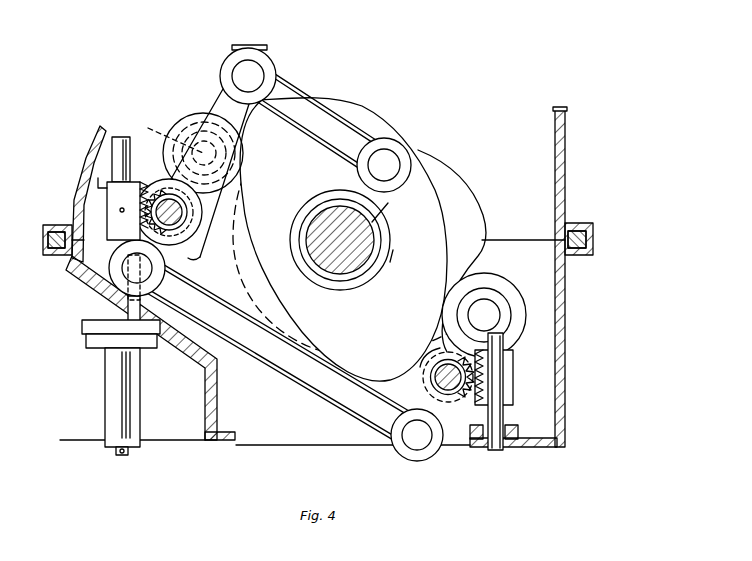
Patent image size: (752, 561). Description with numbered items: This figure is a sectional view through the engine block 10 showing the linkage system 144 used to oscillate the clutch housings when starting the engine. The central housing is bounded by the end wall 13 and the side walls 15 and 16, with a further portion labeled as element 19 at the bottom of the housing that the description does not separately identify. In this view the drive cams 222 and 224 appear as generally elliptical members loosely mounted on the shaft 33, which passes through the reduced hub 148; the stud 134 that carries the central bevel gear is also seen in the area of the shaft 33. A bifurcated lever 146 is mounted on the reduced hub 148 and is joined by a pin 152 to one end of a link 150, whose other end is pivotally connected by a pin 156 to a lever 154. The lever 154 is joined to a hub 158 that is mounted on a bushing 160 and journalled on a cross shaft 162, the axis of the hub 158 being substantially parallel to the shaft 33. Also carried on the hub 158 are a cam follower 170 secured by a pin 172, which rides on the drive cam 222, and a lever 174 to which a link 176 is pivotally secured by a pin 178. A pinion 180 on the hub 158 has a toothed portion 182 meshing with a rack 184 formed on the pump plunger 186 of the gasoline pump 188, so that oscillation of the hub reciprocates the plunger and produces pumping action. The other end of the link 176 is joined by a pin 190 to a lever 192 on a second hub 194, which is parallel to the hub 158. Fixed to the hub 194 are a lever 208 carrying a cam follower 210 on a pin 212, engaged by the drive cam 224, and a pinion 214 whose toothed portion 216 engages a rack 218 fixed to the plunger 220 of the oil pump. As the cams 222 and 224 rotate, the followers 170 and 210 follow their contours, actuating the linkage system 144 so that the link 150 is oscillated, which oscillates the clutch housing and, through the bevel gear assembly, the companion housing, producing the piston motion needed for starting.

The engine block 10 is at (580, 328).
The end wall 13 is at (565, 134).
The side wall 15 is at (565, 388).
The side wall 16 is at (205, 400).
The base 19 is at (292, 438).
The shaft 33 is at (325, 258).
The stud 134 is at (315, 214).
The linkage system 144 is at (322, 50).
The bifurcated lever 146 is at (388, 203).
The reduced hub 148 is at (393, 250).
The link 150 is at (297, 95).
The pin 152 is at (388, 160).
The lever 154 is at (222, 92).
The pin 156 is at (250, 74).
The hub 158 is at (203, 246).
The bushing 160 is at (183, 211).
The cross shaft 162 is at (190, 235).
The cam follower 170 is at (180, 128).
The pin 172 is at (164, 132).
The lever 174 is at (160, 253).
The link 176 is at (253, 342).
The pin 178 is at (130, 272).
The pinion 180 is at (140, 220).
The toothed portion 182 is at (151, 185).
The rack 184 is at (98, 172).
The pump plunger 186 is at (119, 137).
The gasoline pump 188 is at (118, 382).
The pin 190 is at (418, 438).
The lever 192 is at (450, 406).
The hub 194 is at (428, 366).
The lever 208 is at (497, 293).
The cam follower 210 is at (518, 304).
The pin 212 is at (485, 313).
The pinion 214 is at (432, 378).
The toothed portion 216 is at (447, 405).
The rack 218 is at (495, 372).
The plunger 220 is at (506, 448).
The drive cam 222 is at (363, 113).
The drive cam 224 is at (470, 188).